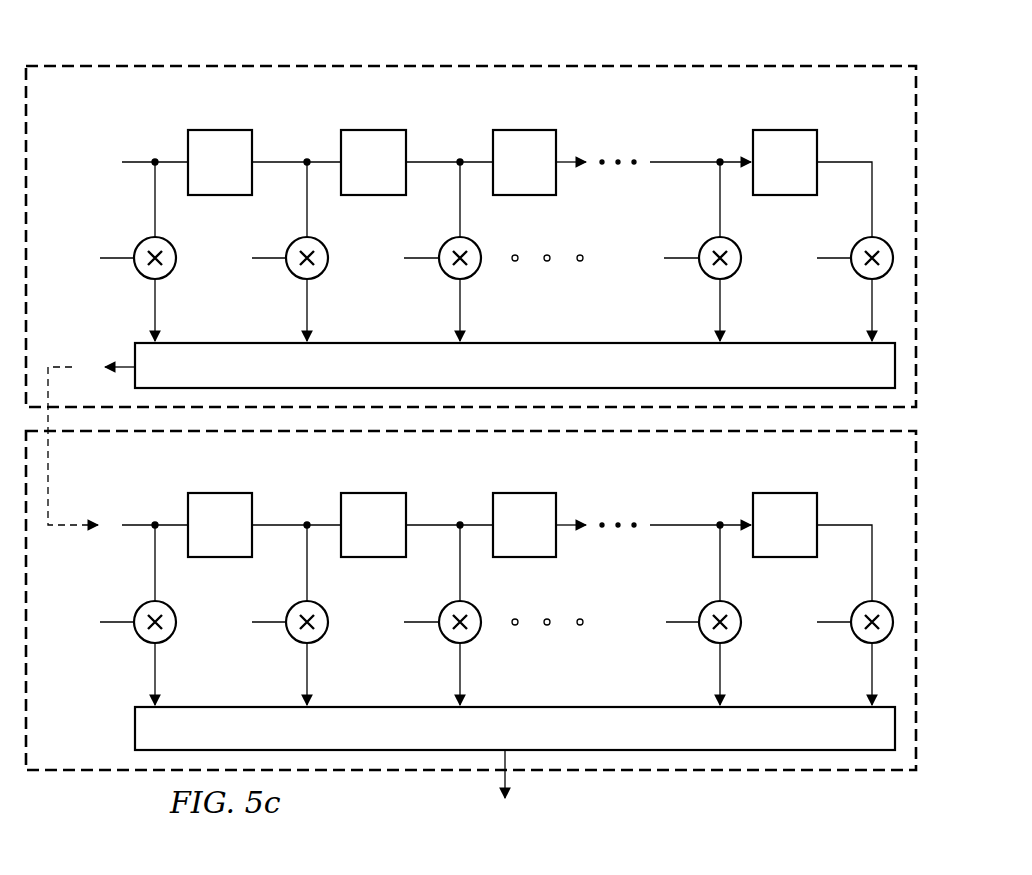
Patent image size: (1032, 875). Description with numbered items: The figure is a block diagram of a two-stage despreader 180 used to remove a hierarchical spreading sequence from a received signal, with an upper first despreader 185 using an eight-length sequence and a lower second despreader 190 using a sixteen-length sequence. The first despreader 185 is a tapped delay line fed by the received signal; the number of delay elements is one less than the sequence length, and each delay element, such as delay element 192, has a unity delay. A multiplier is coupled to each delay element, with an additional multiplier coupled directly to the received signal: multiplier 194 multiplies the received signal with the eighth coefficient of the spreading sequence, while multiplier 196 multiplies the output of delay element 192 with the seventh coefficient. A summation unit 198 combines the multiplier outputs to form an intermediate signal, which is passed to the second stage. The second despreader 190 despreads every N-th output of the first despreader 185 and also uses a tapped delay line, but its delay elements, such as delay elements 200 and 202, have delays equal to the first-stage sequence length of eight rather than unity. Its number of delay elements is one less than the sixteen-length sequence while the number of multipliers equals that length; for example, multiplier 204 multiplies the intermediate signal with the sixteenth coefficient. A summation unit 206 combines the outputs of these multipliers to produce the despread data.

The two-stage despreader 180 is at (679, 52).
The first despreader 185 is at (170, 63).
The second despreader 190 is at (769, 775).
The delay element 192 is at (220, 129).
The multiplier 194 is at (137, 275).
The multiplier 196 is at (289, 275).
The summation unit 198 is at (526, 342).
The delay element 200 is at (220, 492).
The delay element 202 is at (372, 492).
The multiplier 204 is at (137, 639).
The summation unit 206 is at (526, 706).